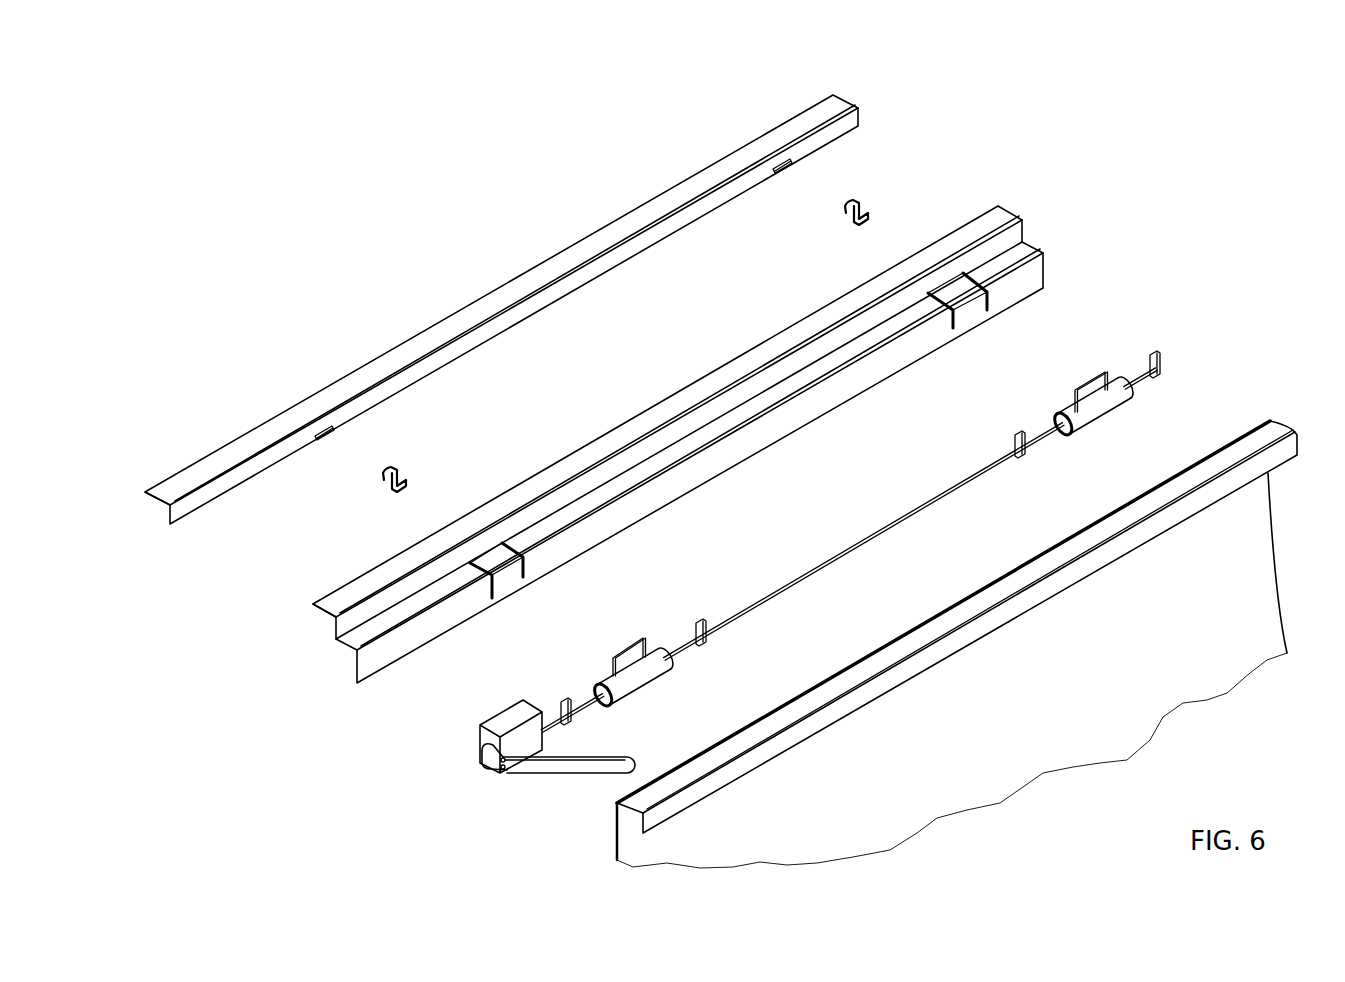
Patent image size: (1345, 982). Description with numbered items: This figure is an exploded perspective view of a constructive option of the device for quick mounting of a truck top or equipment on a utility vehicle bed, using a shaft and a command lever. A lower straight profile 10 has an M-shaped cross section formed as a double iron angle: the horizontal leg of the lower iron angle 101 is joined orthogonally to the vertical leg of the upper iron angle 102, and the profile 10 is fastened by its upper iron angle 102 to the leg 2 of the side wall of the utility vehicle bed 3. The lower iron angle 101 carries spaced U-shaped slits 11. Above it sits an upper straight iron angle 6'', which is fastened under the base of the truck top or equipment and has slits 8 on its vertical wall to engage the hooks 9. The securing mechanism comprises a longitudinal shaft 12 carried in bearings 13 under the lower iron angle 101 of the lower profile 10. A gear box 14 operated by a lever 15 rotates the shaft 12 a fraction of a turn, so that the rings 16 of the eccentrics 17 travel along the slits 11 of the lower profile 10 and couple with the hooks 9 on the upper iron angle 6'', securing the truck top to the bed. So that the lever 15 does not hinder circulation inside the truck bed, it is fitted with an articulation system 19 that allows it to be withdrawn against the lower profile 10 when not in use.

The upper straight iron angle 6'' is at (501, 309).
The slits 8 is at (782, 176).
The hooks 9 is at (868, 205).
The lower straight profile 10 is at (745, 400).
The upper iron angle 102 is at (1013, 213).
The lower iron angle 101 is at (1045, 272).
The U-shaped slits 11 is at (988, 300).
The leg of the side wall 2 is at (1270, 418).
The utility vehicle bed 3 is at (1193, 662).
The longitudinal shaft 12 is at (867, 547).
The bearings 13 is at (703, 618).
The gear box 14 is at (500, 727).
The lever 15 is at (570, 763).
The rings 16 is at (627, 640).
The eccentrics 17 is at (597, 682).
The articulation system 19 is at (500, 773).